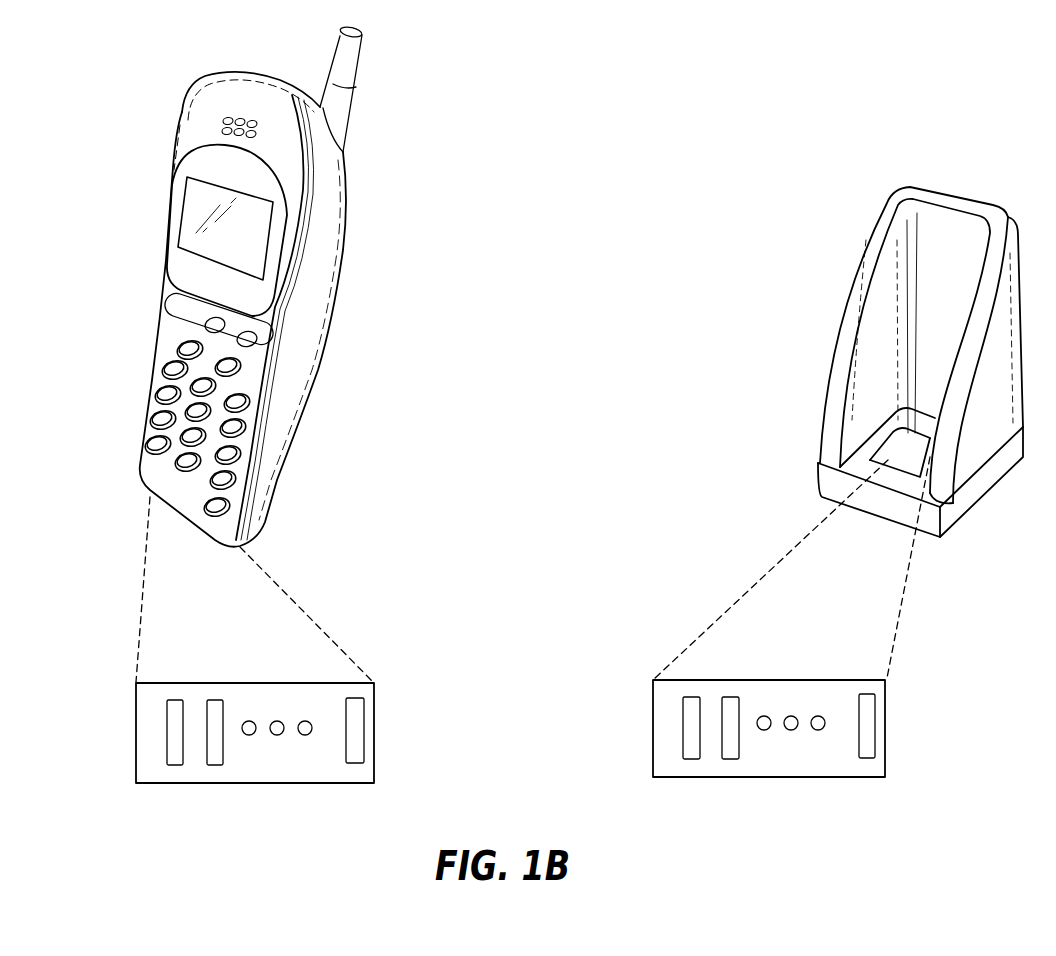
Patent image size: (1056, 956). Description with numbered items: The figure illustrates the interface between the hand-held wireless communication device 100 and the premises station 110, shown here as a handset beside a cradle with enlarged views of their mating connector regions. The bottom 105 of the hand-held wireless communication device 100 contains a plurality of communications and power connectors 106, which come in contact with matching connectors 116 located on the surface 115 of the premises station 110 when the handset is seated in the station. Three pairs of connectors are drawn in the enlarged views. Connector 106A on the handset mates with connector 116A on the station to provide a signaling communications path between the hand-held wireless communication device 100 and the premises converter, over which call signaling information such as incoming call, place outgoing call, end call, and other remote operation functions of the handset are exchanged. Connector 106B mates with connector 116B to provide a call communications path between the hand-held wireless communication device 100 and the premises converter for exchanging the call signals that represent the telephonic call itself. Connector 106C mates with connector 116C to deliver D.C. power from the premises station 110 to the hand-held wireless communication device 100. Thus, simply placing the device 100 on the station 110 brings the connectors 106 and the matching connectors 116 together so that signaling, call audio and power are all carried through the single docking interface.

The hand-held wireless communication device 100 is at (348, 195).
The bottom of hand-held wireless communication device 105 is at (375, 707).
The communications and power connectors 106 is at (157, 765).
The connector 106A is at (175, 735).
The connector 106B is at (213, 707).
The connector 106C is at (353, 740).
The premises station 110 is at (858, 268).
The surface of premises station 115 is at (885, 693).
The matching connectors 116 is at (670, 757).
The connector 116A is at (692, 723).
The connector 116B is at (730, 703).
The connector 116C is at (868, 737).